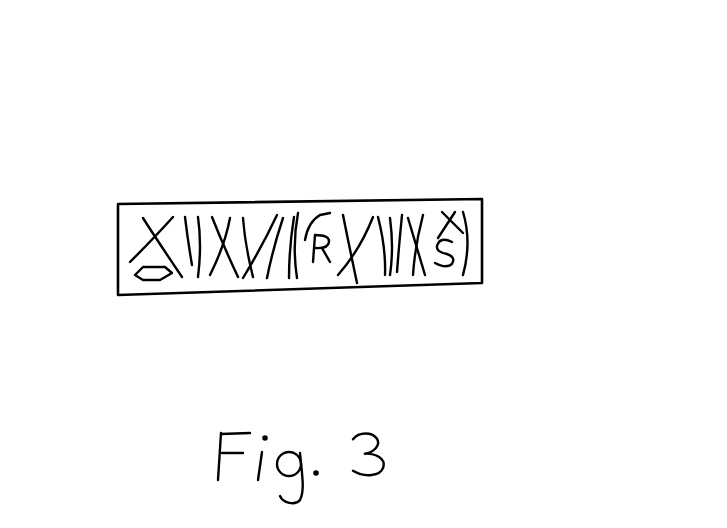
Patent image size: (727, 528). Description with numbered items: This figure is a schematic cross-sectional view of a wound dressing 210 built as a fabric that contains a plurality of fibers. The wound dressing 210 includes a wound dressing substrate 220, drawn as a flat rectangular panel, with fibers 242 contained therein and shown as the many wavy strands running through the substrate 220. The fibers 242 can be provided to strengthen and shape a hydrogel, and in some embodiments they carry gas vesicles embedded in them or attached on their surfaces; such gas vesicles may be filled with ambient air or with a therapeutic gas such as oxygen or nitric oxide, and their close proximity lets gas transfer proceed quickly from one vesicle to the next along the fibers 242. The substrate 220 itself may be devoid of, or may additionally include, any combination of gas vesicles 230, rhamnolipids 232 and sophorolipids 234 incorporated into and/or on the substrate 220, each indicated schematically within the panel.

The wound dressing 210 is at (132, 63).
The wound dressing substrate 220 is at (490, 220).
The fibers 242 is at (567, 144).
The gas vesicles 230 is at (150, 273).
The rhamnolipids 232 is at (316, 268).
The sophorolipids 234 is at (447, 270).